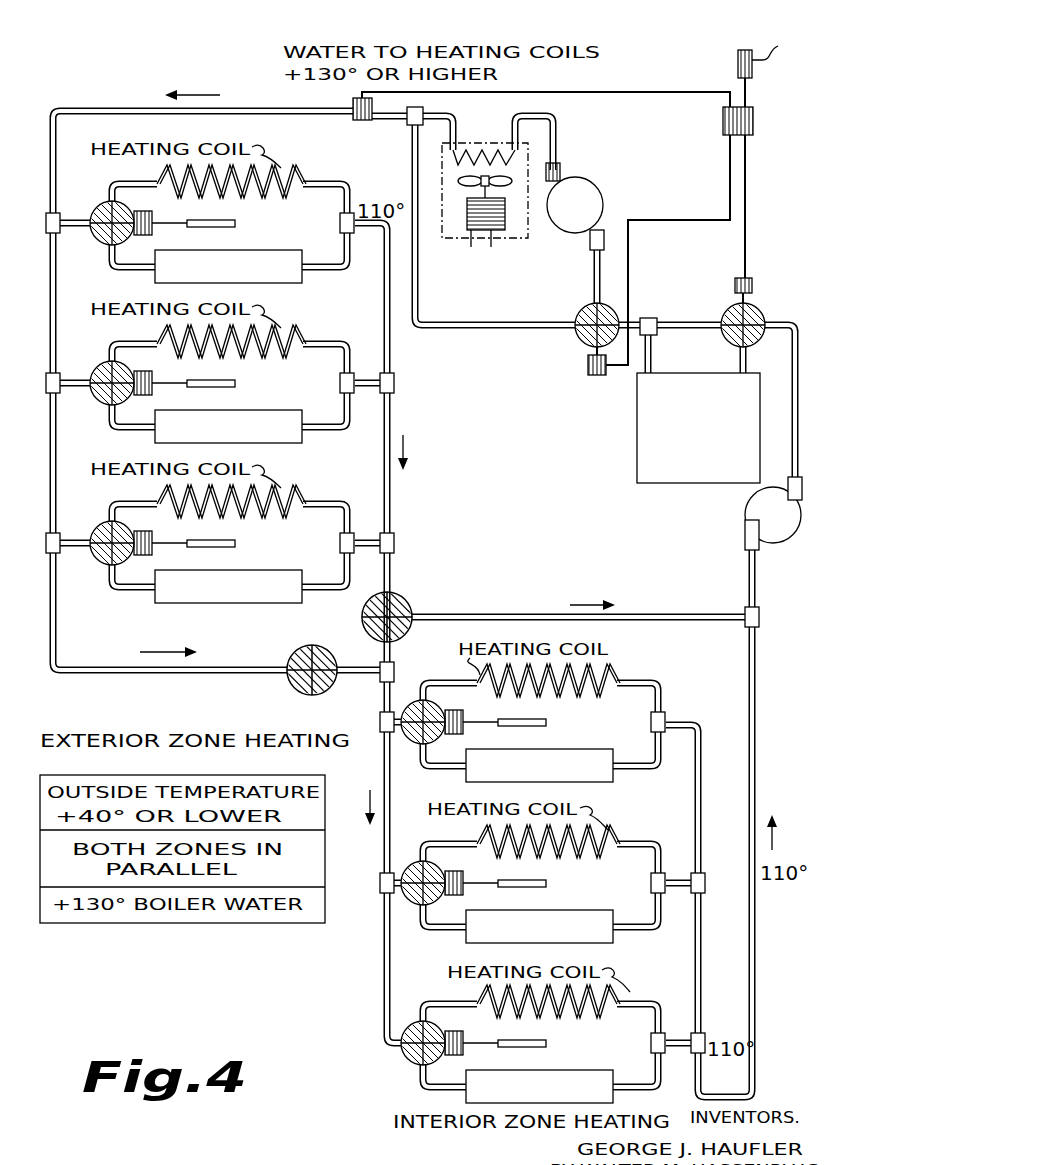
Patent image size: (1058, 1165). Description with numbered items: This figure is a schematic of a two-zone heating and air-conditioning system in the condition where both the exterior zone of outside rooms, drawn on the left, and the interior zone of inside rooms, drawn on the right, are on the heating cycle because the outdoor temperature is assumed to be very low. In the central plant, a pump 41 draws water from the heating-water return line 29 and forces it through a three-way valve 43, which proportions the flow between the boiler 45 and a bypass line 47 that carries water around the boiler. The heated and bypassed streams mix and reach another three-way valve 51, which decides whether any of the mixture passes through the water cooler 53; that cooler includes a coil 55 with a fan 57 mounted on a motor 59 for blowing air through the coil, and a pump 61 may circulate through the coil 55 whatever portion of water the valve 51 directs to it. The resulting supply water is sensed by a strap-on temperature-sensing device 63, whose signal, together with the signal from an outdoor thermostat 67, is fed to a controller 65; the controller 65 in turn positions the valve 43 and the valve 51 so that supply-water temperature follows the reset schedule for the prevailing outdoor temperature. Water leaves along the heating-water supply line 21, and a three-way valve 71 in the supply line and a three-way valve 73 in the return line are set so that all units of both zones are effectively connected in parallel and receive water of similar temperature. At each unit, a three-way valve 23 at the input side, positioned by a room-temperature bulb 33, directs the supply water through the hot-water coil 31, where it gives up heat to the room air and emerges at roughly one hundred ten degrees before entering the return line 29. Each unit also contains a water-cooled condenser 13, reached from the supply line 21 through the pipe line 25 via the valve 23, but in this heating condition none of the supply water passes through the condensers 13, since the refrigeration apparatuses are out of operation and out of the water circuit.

The condenser 13 is at (282, 251).
The heating-water supply line 21 is at (278, 118).
The 3-way valve 23 is at (95, 235).
The pipe line 25 is at (110, 269).
The heating-water return line 29 is at (798, 340).
The hot-water coil 31 is at (297, 169).
The bulb 33 is at (225, 224).
The pump 41 is at (795, 533).
The 3-way valve 43 is at (758, 313).
The boiler 45 is at (637, 436).
The bypass line 47 is at (668, 320).
The 3-way valve 51 is at (585, 305).
The water cooler 53 is at (528, 222).
The coil 55 is at (484, 141).
The fan 57 is at (462, 186).
The motor 59 is at (481, 235).
The pump 61 is at (597, 193).
The temperature-sensing device 63 is at (352, 103).
The controller 65 is at (755, 118).
The outdoor thermostat 67 is at (738, 62).
The 3-way valve 71 is at (288, 685).
The 3-way valve 73 is at (412, 605).